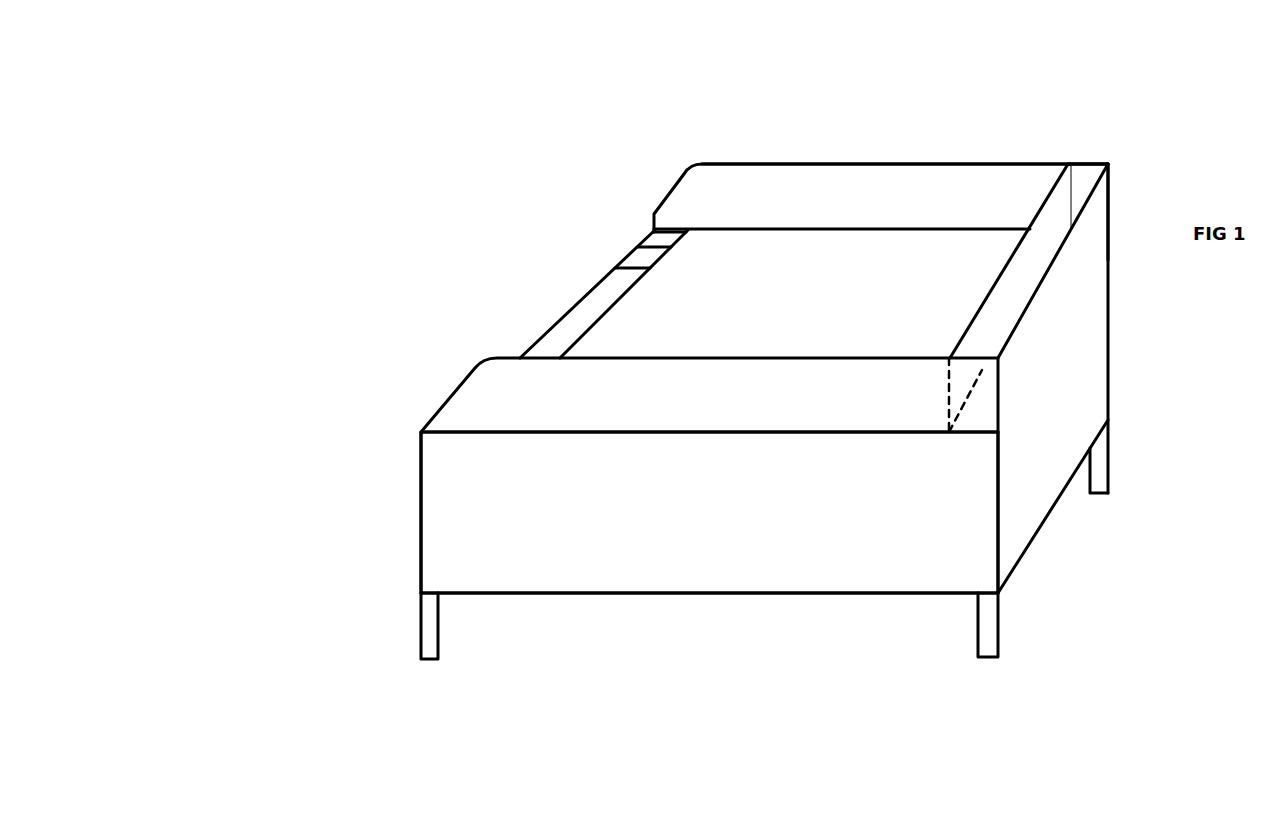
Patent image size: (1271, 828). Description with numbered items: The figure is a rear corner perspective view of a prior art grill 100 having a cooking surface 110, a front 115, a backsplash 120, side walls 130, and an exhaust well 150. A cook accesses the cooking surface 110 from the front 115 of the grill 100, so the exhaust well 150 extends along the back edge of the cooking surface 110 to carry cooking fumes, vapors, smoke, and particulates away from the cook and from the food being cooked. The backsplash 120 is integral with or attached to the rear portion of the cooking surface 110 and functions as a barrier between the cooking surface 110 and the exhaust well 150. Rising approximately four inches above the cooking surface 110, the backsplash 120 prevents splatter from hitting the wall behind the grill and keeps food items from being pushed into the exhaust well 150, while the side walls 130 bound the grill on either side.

The grill 100 is at (380, 477).
The cooking surface 110 is at (663, 315).
The front 115 is at (620, 250).
The backsplash 120 is at (948, 405).
The side walls 130 is at (816, 183).
The exhaust well 150 is at (1082, 182).